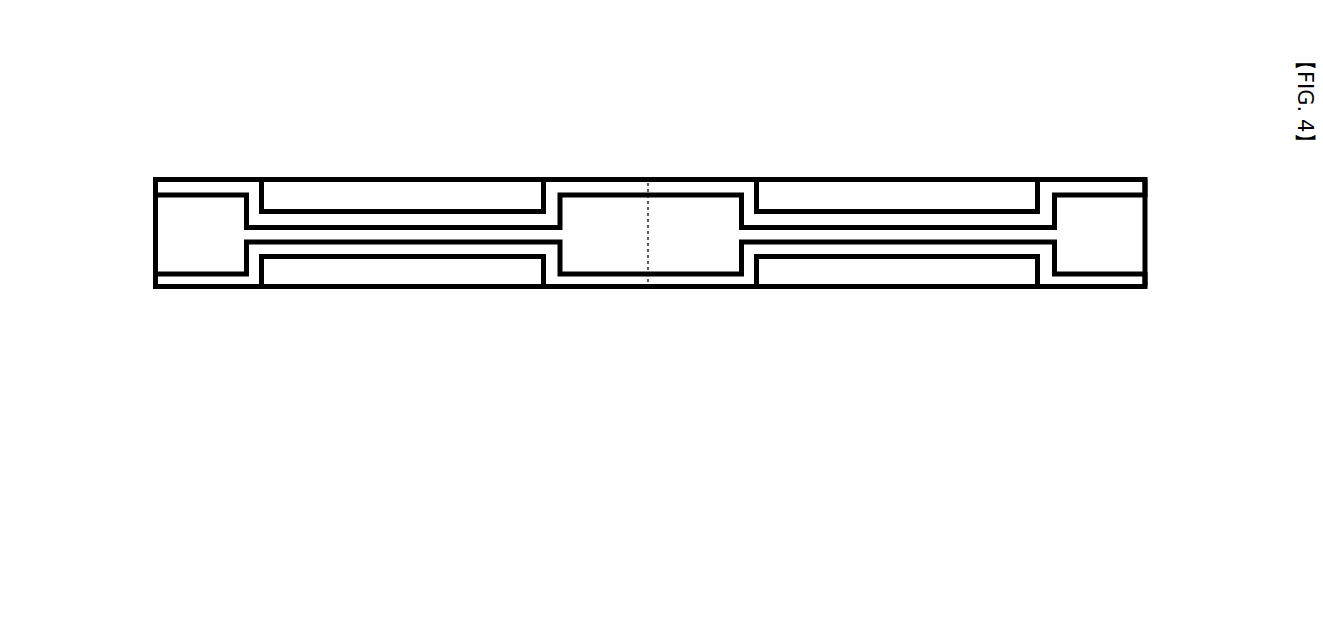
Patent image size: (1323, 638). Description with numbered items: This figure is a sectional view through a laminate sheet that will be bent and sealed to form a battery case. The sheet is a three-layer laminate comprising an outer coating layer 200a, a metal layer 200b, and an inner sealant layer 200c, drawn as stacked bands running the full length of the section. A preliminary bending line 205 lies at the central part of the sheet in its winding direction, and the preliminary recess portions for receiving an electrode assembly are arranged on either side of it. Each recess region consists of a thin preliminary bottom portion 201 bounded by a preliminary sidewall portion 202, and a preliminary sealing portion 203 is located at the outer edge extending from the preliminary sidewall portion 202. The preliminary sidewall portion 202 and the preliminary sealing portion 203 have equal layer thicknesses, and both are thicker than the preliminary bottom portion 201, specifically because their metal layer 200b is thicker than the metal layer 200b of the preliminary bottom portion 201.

The outer coating layer 200a is at (1132, 188).
The metal layer 200b is at (1130, 228).
The inner sealant layer 200c is at (1132, 280).
The preliminary bottom portion 201 is at (543, 302).
The preliminary sidewall portion 202 is at (208, 164).
The preliminary sealing portion 203 is at (208, 164).
The preliminary bending line 205 is at (648, 233).